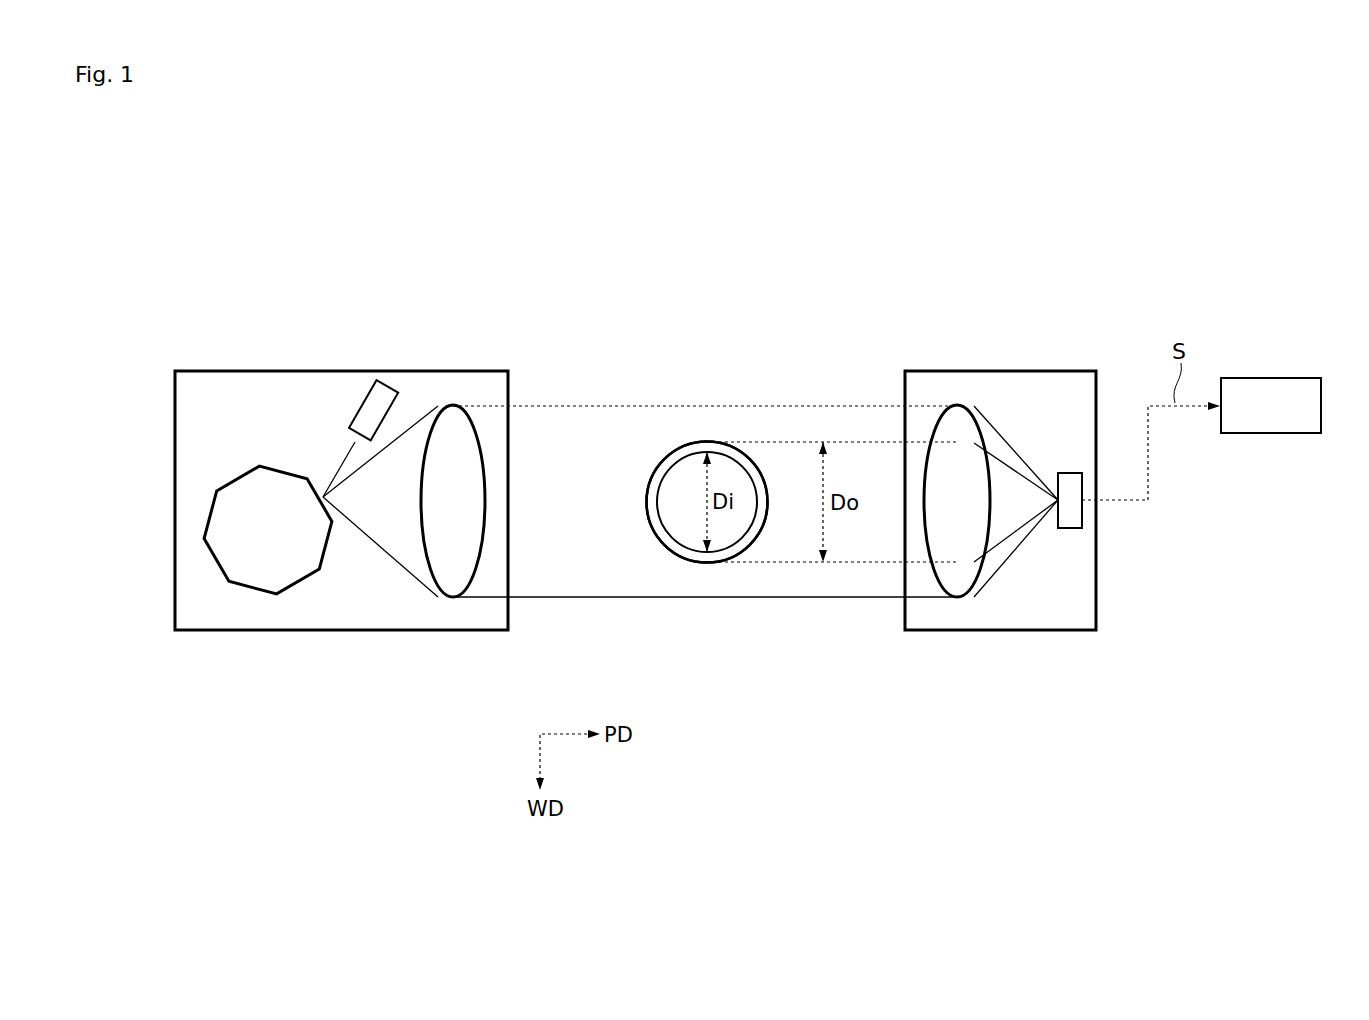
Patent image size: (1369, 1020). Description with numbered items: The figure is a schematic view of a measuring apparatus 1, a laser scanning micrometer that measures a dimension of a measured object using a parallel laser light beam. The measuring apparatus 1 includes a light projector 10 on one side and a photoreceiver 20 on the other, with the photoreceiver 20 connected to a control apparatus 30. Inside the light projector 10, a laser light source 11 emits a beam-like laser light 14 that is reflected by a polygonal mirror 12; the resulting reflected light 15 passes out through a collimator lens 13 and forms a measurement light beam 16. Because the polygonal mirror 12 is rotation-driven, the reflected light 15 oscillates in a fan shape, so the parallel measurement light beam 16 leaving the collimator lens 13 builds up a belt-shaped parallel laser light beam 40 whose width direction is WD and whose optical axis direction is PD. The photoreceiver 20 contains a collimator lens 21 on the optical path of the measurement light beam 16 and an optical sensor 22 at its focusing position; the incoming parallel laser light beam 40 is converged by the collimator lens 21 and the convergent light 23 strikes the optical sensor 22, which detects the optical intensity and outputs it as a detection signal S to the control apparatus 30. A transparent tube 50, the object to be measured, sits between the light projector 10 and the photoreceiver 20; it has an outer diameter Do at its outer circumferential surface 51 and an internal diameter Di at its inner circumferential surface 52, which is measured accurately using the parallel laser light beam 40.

The measuring apparatus 1 is at (347, 224).
The light projector 10 is at (200, 360).
The laser light source 11 is at (363, 400).
The polygonal mirror 12 is at (245, 465).
The collimator lens 13 is at (453, 404).
The laser light 14 is at (340, 466).
The reflected light 15 is at (378, 552).
The measurement light beam 16 is at (488, 597).
The photoreceiver 20 is at (1022, 354).
The collimator lens 21 is at (957, 404).
The optical sensor 22 is at (1073, 535).
The convergent light 23 is at (1023, 555).
The control apparatus 30 is at (1262, 378).
The parallel laser light beam 40 is at (578, 422).
The transparent tube 50 is at (708, 425).
The outer circumferential surface 51 is at (665, 549).
The inner circumferential surface 52 is at (752, 512).